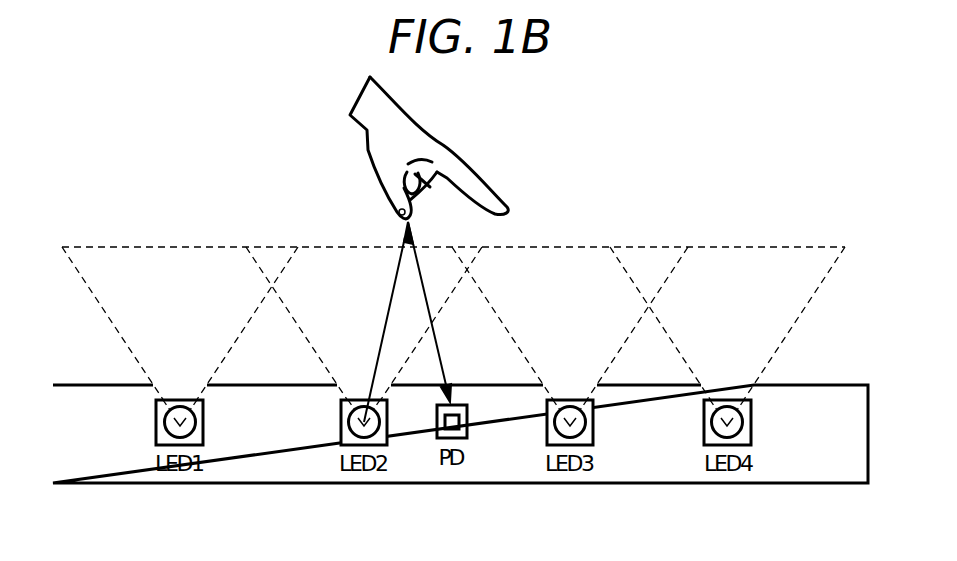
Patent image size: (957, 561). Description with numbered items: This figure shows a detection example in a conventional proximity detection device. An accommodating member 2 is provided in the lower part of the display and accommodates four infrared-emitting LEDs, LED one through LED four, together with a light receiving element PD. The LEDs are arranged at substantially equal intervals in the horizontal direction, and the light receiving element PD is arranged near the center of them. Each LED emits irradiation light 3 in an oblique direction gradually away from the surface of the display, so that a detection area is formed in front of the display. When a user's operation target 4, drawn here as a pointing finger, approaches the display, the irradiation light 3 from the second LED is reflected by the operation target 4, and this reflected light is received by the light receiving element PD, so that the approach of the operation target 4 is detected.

The accommodating member 2 is at (692, 486).
The irradiation light 3 is at (752, 247).
The operation target 4 is at (408, 118).